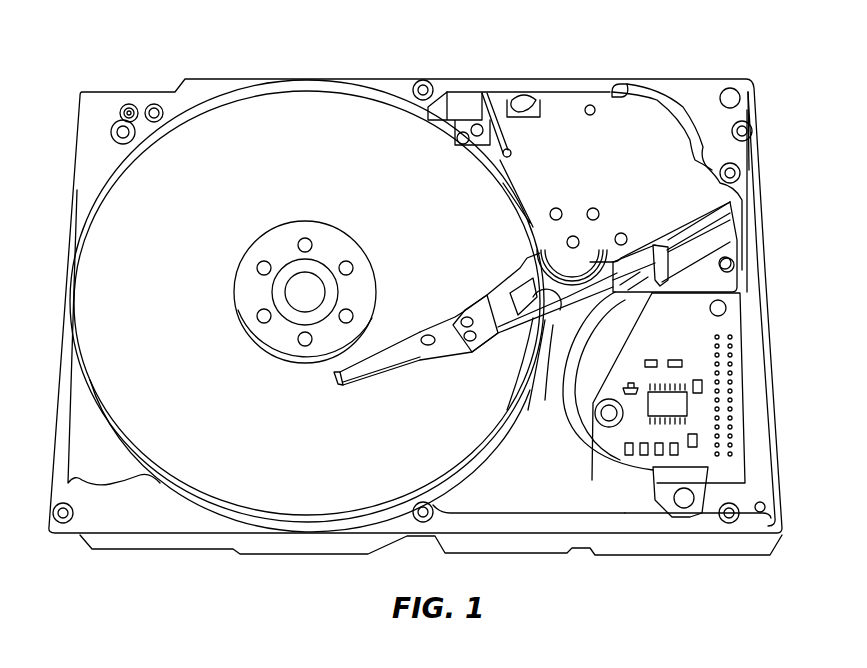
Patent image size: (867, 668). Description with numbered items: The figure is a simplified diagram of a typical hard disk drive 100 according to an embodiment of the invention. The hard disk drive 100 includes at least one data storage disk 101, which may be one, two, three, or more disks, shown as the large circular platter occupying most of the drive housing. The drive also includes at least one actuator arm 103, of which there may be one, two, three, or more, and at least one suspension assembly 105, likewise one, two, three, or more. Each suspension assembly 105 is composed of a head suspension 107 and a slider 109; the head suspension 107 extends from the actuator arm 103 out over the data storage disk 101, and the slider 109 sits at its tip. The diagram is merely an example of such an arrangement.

The hard disk drive 100 is at (615, 60).
The data storage disk 101 is at (238, 113).
The actuator arm 103 is at (532, 340).
The suspension assembly 105 is at (387, 378).
The head suspension 107 is at (428, 337).
The slider 109 is at (322, 382).